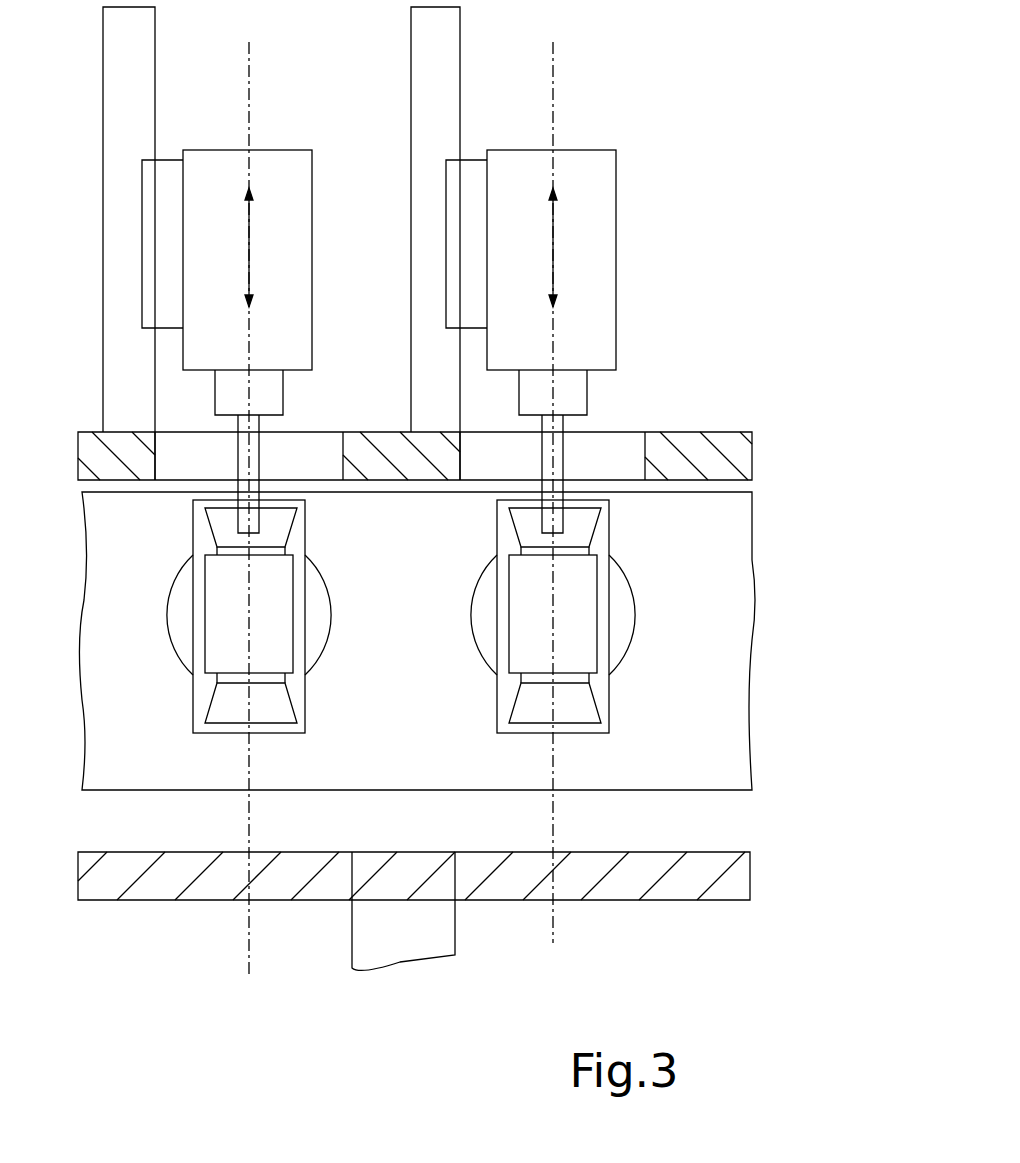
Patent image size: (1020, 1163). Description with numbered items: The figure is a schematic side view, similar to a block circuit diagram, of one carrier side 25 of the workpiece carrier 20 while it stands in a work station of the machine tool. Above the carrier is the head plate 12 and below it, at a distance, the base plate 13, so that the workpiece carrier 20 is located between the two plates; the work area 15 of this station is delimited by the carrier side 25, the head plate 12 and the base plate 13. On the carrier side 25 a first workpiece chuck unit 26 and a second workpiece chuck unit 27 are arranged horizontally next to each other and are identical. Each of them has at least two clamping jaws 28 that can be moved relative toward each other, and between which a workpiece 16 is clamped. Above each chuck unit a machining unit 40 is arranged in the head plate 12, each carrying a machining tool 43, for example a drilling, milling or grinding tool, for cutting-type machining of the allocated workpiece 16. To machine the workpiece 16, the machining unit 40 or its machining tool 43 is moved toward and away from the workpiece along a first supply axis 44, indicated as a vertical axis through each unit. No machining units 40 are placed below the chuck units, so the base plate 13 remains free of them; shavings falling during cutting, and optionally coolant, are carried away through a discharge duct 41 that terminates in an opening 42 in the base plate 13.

The head plate 12 is at (722, 440).
The base plate 13 is at (637, 888).
The work area 15 is at (390, 718).
The workpiece 16 is at (283, 575).
The workpiece carrier 20 is at (757, 632).
The carrier side 25 is at (680, 590).
The first workpiece chuck unit 26 is at (283, 735).
The second workpiece chuck unit 27 is at (590, 735).
The clamping jaw 28 is at (213, 520).
The machining unit 40 is at (290, 150).
The discharge duct 41 is at (440, 925).
The opening 42 is at (352, 852).
The machining tool 43 is at (262, 455).
The first supply axis 44 is at (245, 910).